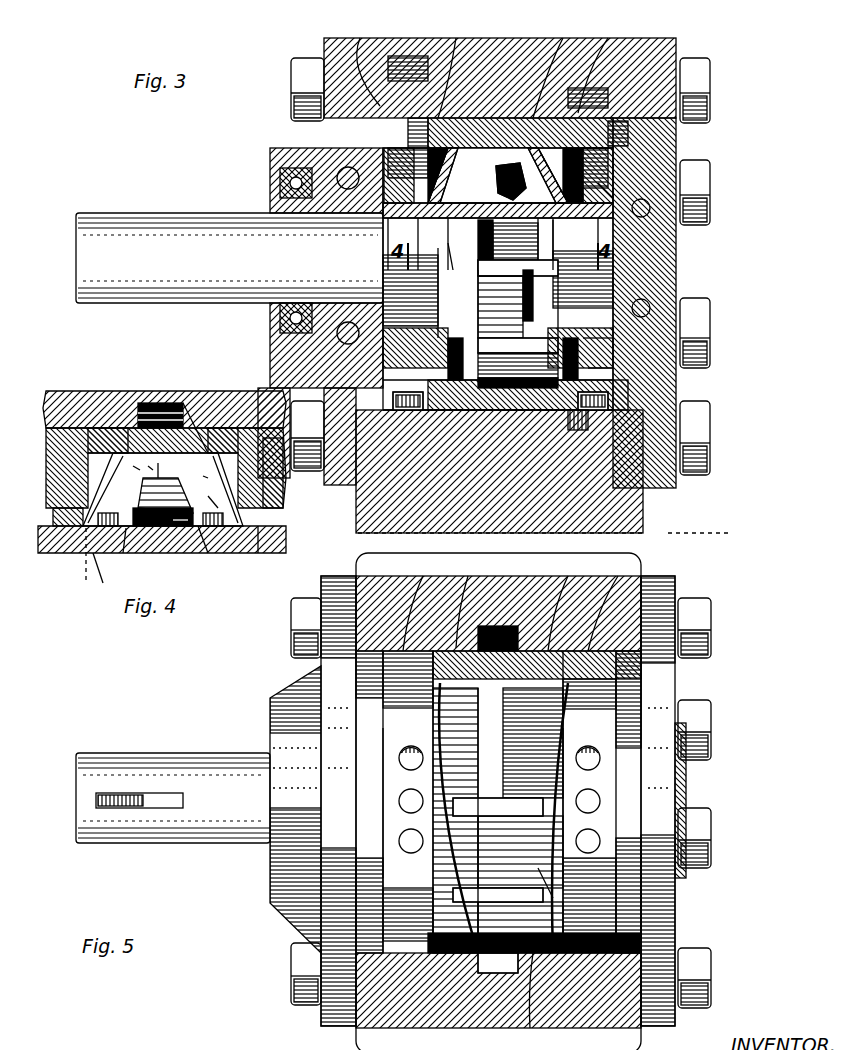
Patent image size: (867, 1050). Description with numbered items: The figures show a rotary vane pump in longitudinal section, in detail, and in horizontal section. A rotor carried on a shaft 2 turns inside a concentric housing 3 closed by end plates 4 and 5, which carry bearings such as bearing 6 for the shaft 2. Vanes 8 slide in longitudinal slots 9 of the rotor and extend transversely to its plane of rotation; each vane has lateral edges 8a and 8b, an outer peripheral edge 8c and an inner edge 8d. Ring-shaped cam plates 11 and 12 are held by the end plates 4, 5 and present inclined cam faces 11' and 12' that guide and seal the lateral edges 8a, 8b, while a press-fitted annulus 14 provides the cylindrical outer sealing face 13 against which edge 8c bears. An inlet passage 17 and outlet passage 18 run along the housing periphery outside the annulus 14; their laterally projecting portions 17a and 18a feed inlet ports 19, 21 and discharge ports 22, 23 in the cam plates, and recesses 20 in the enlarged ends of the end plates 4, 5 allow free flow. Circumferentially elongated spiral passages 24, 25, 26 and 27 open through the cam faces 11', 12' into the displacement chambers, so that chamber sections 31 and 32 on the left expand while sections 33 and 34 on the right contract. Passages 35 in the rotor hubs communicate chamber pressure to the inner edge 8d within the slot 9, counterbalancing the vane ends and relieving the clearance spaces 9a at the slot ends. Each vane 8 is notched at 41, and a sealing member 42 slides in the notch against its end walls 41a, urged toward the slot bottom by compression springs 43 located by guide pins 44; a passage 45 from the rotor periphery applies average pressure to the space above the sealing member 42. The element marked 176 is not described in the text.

In FIG. 3, the shaft 2 is at (170, 206).
In FIG. 5, the shaft 2 is at (200, 746).
In FIG. 3, the housing 3 is at (615, 47).
In FIG. 4, the housing 3 is at (80, 386).
In FIG. 5, the housing 3 is at (378, 586).
In FIG. 3, the end plate 4 is at (283, 85).
In FIG. 5, the end plate 4 is at (290, 661).
In FIG. 3, the end plate 5 is at (690, 89).
In FIG. 5, the end plate 5 is at (650, 673).
In FIG. 3, the bearing 6 is at (585, 80).
In FIG. 3, the vane 8 is at (503, 173).
In FIG. 4, the vane 8 is at (163, 500).
In FIG. 5, the vane 8 is at (505, 791).
In FIG. 4, the lateral edge 8a is at (149, 473).
In FIG. 4, the lateral edge 8b is at (206, 468).
In FIG. 4, the outer edge 8c is at (172, 466).
In FIG. 4, the inner edge 8d is at (115, 546).
In FIG. 3, the slot 9 is at (559, 245).
In FIG. 4, the slot 9 is at (215, 541).
In FIG. 4, the clearance space 9a is at (55, 521).
In FIG. 4, the cam plate 11 is at (81, 430).
In FIG. 5, the cam plate 11 is at (419, 601).
In FIG. 3, the cam face 11' is at (354, 58).
In FIG. 4, the cam face 11' is at (105, 568).
In FIG. 5, the cam face 11' is at (467, 599).
In FIG. 4, the cam plate 12 is at (247, 432).
In FIG. 5, the cam plate 12 is at (503, 787).
In FIG. 3, the cam face 12' is at (669, 252).
In FIG. 4, the cam face 12' is at (273, 548).
In FIG. 5, the cam face 12' is at (542, 1001).
In FIG. 3, the outer guiding and sealing face 13 is at (555, 31).
In FIG. 4, the outer guiding and sealing face 13 is at (188, 420).
In FIG. 5, the outer guiding and sealing face 13 is at (575, 563).
In FIG. 3, the annulus 14 is at (448, 31).
In FIG. 4, the annulus 14 is at (112, 428).
In FIG. 5, the annulus 14 is at (615, 563).
In FIG. 4, the inlet passage 17 is at (150, 395).
In FIG. 5, the inlet passage 17 is at (487, 966).
In FIG. 3, the laterally projecting portion of inlet passage 17a is at (400, 48).
In FIG. 3, the outlet passage 18 is at (600, 31).
In FIG. 5, the outlet passage 18 is at (492, 618).
In FIG. 3, the laterally projecting portion of discharge passage 18a is at (355, 477).
In FIG. 3, the inlet port 19 is at (425, 125).
In FIG. 5, the inlet port 19 is at (414, 753).
In FIG. 3, the recess 20 is at (400, 123).
In FIG. 4, the recess 20 is at (262, 430).
In FIG. 5, the recess 20 is at (390, 769).
In FIG. 3, the inlet port 21 is at (590, 371).
In FIG. 3, the discharge port 22 is at (262, 381).
In FIG. 3, the discharge port 23 is at (600, 153).
In FIG. 5, the discharge port 23 is at (578, 806).
In FIG. 3, the passage 24 is at (262, 171).
In FIG. 3, the passage 25 is at (600, 336).
In FIG. 3, the passage 26 is at (375, 212).
In FIG. 3, the passage 27 is at (605, 186).
In FIG. 5, the displacement chamber section 31 is at (460, 809).
In FIG. 5, the displacement chamber section 32 is at (452, 762).
In FIG. 5, the displacement chamber section 33 is at (560, 869).
In FIG. 5, the displacement chamber section 34 is at (525, 782).
In FIG. 3, the passage 35 is at (438, 247).
In FIG. 4, the passage 35 is at (78, 576).
In FIG. 4, the notch 41 is at (104, 505).
In FIG. 4, the end wall 41a is at (175, 536).
In FIG. 4, the sealing member 42 is at (190, 546).
In FIG. 4, the compression spring 43 is at (186, 517).
In FIG. 4, the guide pin 44 is at (210, 492).
In FIG. 3, the passage 45 is at (457, 218).
In FIG. 4, the passage 45 is at (148, 459).
In FIG. 5, the passage 45 is at (490, 759).
In FIG. 3, the passage 176 is at (582, 413).